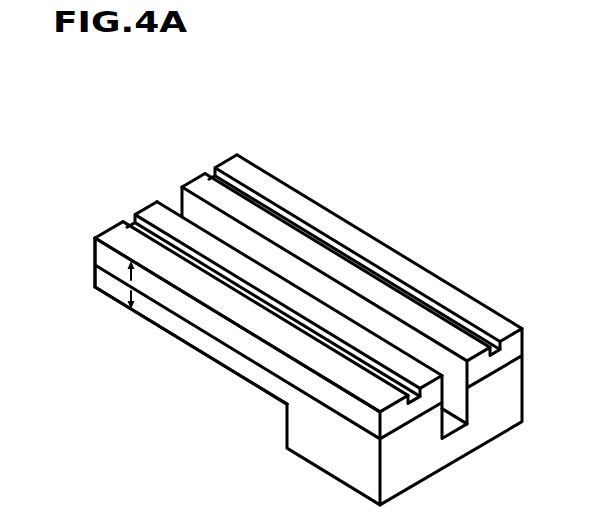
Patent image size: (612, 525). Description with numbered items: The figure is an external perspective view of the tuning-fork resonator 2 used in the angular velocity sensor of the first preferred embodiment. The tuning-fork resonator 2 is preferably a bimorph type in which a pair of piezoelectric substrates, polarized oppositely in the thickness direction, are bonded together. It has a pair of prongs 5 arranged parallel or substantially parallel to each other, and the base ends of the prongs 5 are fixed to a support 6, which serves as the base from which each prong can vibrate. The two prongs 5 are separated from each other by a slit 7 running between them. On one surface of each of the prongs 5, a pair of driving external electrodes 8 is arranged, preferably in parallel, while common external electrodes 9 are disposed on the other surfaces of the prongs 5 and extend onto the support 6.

The tuning-fork resonator 2 is at (201, 472).
The prongs 5 is at (227, 362).
The support 6 is at (296, 432).
The slit 7 is at (307, 283).
The driving external electrodes 8 is at (241, 168).
The common external electrodes 9 is at (131, 313).